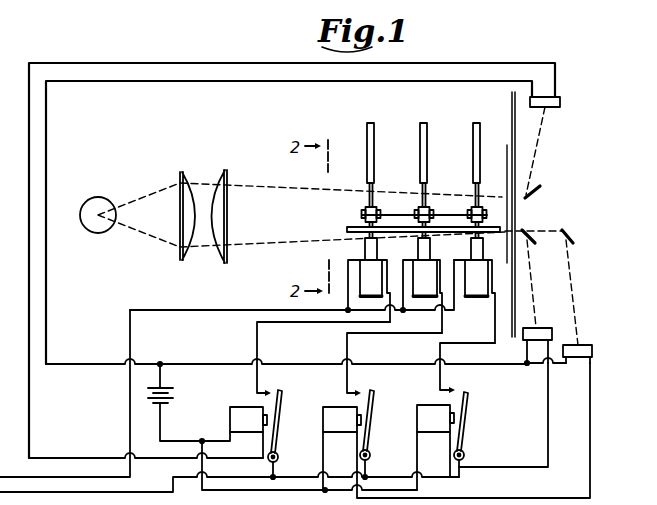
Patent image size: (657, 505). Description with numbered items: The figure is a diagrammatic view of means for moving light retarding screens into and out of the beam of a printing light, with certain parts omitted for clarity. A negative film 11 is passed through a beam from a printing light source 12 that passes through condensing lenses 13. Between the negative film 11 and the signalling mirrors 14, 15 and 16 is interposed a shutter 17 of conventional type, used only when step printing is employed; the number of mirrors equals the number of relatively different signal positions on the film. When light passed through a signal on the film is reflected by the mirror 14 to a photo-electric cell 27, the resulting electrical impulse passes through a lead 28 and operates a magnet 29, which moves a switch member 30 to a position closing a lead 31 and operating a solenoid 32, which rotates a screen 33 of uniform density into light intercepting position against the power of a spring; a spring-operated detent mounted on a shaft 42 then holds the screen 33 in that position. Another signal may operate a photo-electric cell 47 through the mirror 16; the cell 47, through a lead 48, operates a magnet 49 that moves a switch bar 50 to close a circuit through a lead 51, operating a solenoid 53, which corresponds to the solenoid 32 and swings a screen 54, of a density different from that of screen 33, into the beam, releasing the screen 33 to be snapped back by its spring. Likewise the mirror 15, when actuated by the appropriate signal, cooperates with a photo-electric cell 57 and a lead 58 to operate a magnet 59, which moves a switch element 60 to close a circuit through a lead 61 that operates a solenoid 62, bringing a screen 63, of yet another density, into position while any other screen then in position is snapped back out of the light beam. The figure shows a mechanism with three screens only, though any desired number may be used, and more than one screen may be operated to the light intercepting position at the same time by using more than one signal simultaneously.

The negative film 11 is at (507, 157).
The printing light source 12 is at (98, 197).
The condensing lenses 13 is at (181, 172).
The signalling mirror 14 is at (541, 187).
The signalling mirror 15 is at (535, 244).
The signalling mirror 16 is at (574, 244).
The shutter 17 is at (515, 310).
The photo-electric cell 27 is at (558, 99).
The lead 28 is at (30, 430).
The magnet 29 is at (235, 408).
The switch member 30 is at (276, 425).
The lead 31 is at (283, 322).
The solenoid 32 is at (368, 266).
The screen 33 is at (372, 140).
The shaft 42 is at (355, 228).
The photo-electric cell 47 is at (593, 352).
The lead 48 is at (591, 448).
The magnet 49 is at (340, 408).
The switch bar 50 is at (368, 425).
The lead 51 is at (385, 333).
The solenoid 53 is at (426, 268).
The screen 54 is at (425, 145).
The photo-electric cell 57 is at (552, 338).
The lead 58 is at (517, 467).
The magnet 59 is at (430, 407).
The switch element 60 is at (466, 408).
The lead 61 is at (480, 345).
The solenoid 62 is at (474, 290).
The screen 63 is at (478, 140).